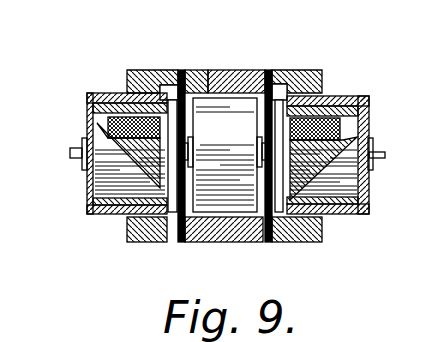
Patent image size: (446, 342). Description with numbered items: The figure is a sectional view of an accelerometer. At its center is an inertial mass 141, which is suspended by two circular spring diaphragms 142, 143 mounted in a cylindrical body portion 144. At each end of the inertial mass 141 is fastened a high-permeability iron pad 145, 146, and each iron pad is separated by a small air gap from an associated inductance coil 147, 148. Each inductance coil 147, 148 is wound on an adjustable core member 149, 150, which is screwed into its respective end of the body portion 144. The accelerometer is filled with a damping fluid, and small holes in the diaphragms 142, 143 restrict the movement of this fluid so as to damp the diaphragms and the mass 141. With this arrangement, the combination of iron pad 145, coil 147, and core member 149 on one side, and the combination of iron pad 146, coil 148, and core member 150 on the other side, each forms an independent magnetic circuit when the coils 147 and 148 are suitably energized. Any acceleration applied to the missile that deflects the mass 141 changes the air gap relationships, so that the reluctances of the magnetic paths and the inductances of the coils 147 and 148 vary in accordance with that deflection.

The inertial mass 141 is at (227, 103).
The circular spring diaphragm 142 is at (210, 70).
The circular spring diaphragm 143 is at (267, 87).
The cylindrical body portion 144 is at (229, 130).
The high-permeability iron pad 145 is at (151, 70).
The high-permeability iron pad 146 is at (301, 72).
The inductance coil 147 is at (110, 97).
The inductance coil 148 is at (356, 140).
The adjustable core member 149 is at (95, 141).
The adjustable core member 150 is at (371, 107).